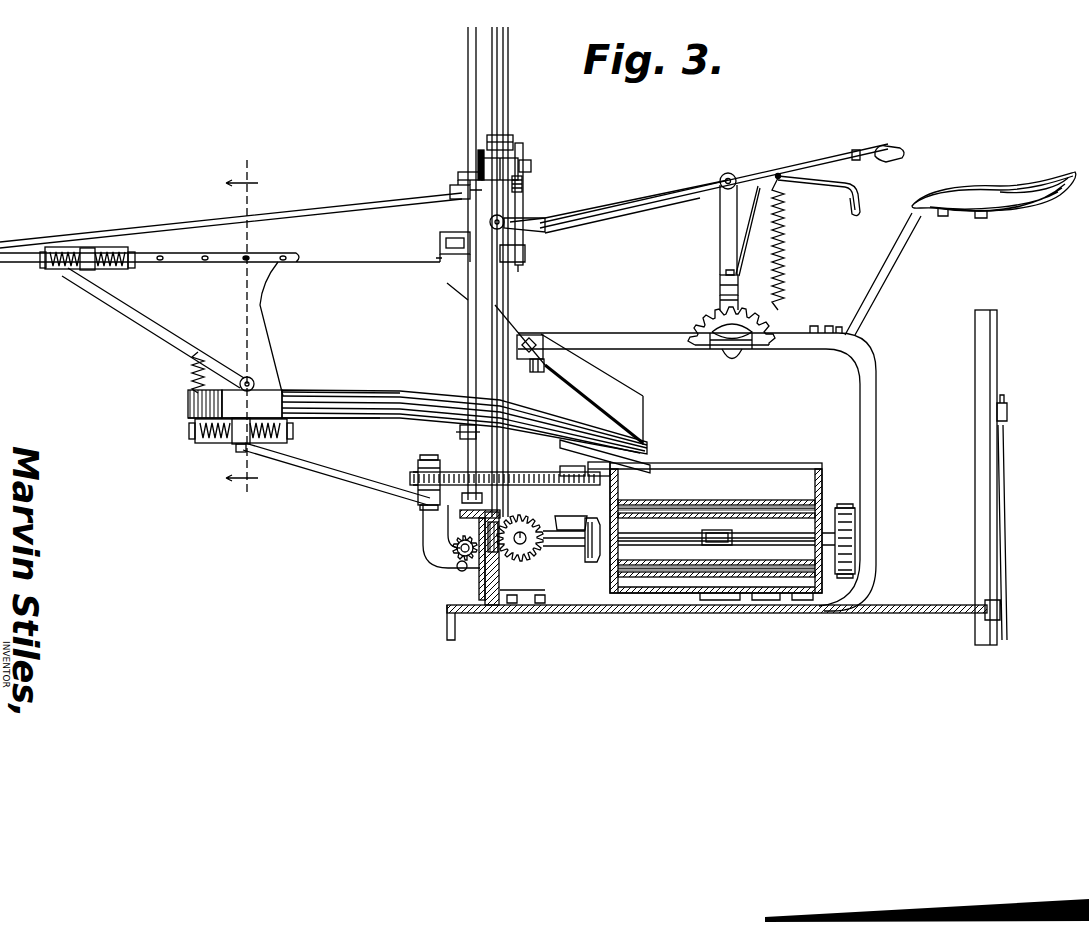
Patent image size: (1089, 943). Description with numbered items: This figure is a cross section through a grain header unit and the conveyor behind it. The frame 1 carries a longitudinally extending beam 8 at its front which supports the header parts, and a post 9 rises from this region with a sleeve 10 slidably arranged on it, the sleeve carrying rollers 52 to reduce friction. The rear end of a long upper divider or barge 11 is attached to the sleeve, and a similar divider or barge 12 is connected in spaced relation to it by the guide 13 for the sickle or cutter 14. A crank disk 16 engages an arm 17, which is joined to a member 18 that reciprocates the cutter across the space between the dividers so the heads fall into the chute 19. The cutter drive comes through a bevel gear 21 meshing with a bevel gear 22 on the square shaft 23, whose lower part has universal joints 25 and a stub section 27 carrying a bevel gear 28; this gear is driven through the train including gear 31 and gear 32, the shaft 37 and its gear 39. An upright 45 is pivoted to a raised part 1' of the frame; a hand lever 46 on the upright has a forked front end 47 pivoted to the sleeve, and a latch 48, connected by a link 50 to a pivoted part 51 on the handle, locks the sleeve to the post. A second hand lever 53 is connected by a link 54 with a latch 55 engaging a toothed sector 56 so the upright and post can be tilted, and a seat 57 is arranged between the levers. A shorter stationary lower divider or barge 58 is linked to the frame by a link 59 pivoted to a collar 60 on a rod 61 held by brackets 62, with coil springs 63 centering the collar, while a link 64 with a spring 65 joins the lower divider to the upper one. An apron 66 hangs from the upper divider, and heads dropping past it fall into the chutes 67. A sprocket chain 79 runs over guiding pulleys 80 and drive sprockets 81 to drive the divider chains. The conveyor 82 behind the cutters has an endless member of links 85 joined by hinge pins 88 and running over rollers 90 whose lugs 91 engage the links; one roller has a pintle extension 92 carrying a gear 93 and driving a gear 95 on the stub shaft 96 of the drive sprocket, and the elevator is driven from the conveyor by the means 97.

The frame 1 is at (713, 479).
The raised part of the frame 1' is at (719, 412).
The longitudinally extending beam 8 is at (490, 608).
The post 9 is at (498, 305).
The sleeve 10 is at (523, 186).
The divider or barge 11 is at (343, 222).
The divider or barge 12 is at (188, 406).
The guide 13 is at (438, 256).
The sickle or cutter 14 is at (444, 240).
The crank disk 16 is at (523, 156).
The arm 17 is at (531, 166).
The member 18 is at (526, 254).
The chute 19 is at (542, 334).
The bevel gear 21 is at (482, 162).
The bevel gear 22 is at (458, 176).
The square shaft 23 is at (467, 320).
The universal joints 25 is at (460, 434).
The stub section 27 is at (445, 522).
The bevel gear 28 is at (455, 548).
The gear 31 is at (480, 575).
The gear 32 is at (542, 558).
The shaft 37 is at (482, 560).
The gear 39 is at (458, 564).
The upright 45 is at (720, 248).
The hand lever 46 is at (805, 165).
The forked front end 47 is at (540, 228).
The latch 48 is at (504, 220).
The link 50 is at (615, 197).
The pivoted part 51 is at (886, 148).
The rollers 52 is at (506, 138).
The second hand lever 53 is at (838, 193).
The link 54 is at (740, 218).
The latch 55 is at (720, 280).
The toothed sector 56 is at (760, 320).
The seat 57 is at (998, 196).
The second divider or barge 58 is at (345, 420).
The link 59 is at (360, 481).
The collar 60 is at (90, 270).
The rod 61 is at (65, 265).
The brackets 62 is at (43, 262).
The coil springs 63 is at (78, 265).
The link 64 is at (160, 328).
The spring 65 is at (192, 374).
The apron 66 is at (270, 352).
The chutes 67 is at (330, 398).
The sprocket chain 79 is at (568, 486).
The guiding pulleys 80 is at (418, 476).
The drive sprockets 81 is at (605, 459).
The conveyor 82 is at (758, 583).
The links 85 is at (785, 504).
The hinge pins 88 is at (690, 502).
The rollers 90 is at (795, 536).
The lugs 91 is at (722, 528).
The pintle extension 92 is at (592, 563).
The gear 93 is at (528, 573).
The gear 95 is at (615, 490).
The stub shaft 96 is at (560, 465).
The elevator driving means 97 is at (850, 530).